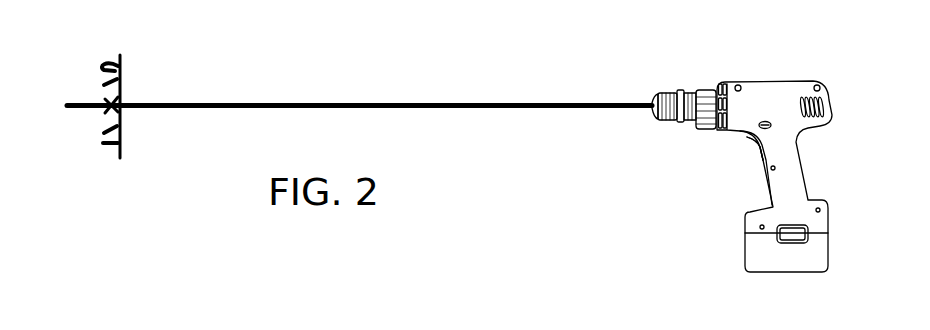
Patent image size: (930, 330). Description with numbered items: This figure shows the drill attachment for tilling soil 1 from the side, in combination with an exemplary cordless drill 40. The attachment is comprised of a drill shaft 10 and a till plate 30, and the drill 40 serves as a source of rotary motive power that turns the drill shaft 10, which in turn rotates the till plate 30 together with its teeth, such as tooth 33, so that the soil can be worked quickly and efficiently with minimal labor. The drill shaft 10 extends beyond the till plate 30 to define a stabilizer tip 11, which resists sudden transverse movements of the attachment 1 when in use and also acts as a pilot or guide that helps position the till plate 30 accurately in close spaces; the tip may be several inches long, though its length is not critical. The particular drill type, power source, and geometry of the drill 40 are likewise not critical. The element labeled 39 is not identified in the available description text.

The drill attachment for tilling soil 1 is at (646, 53).
The drill shaft 10 is at (622, 112).
The stabilizer tip 11 is at (100, 106).
The till plate 30 is at (125, 155).
The tooth 33 is at (103, 108).
The top hook 39 is at (120, 85).
The cordless drill 40 is at (761, 166).